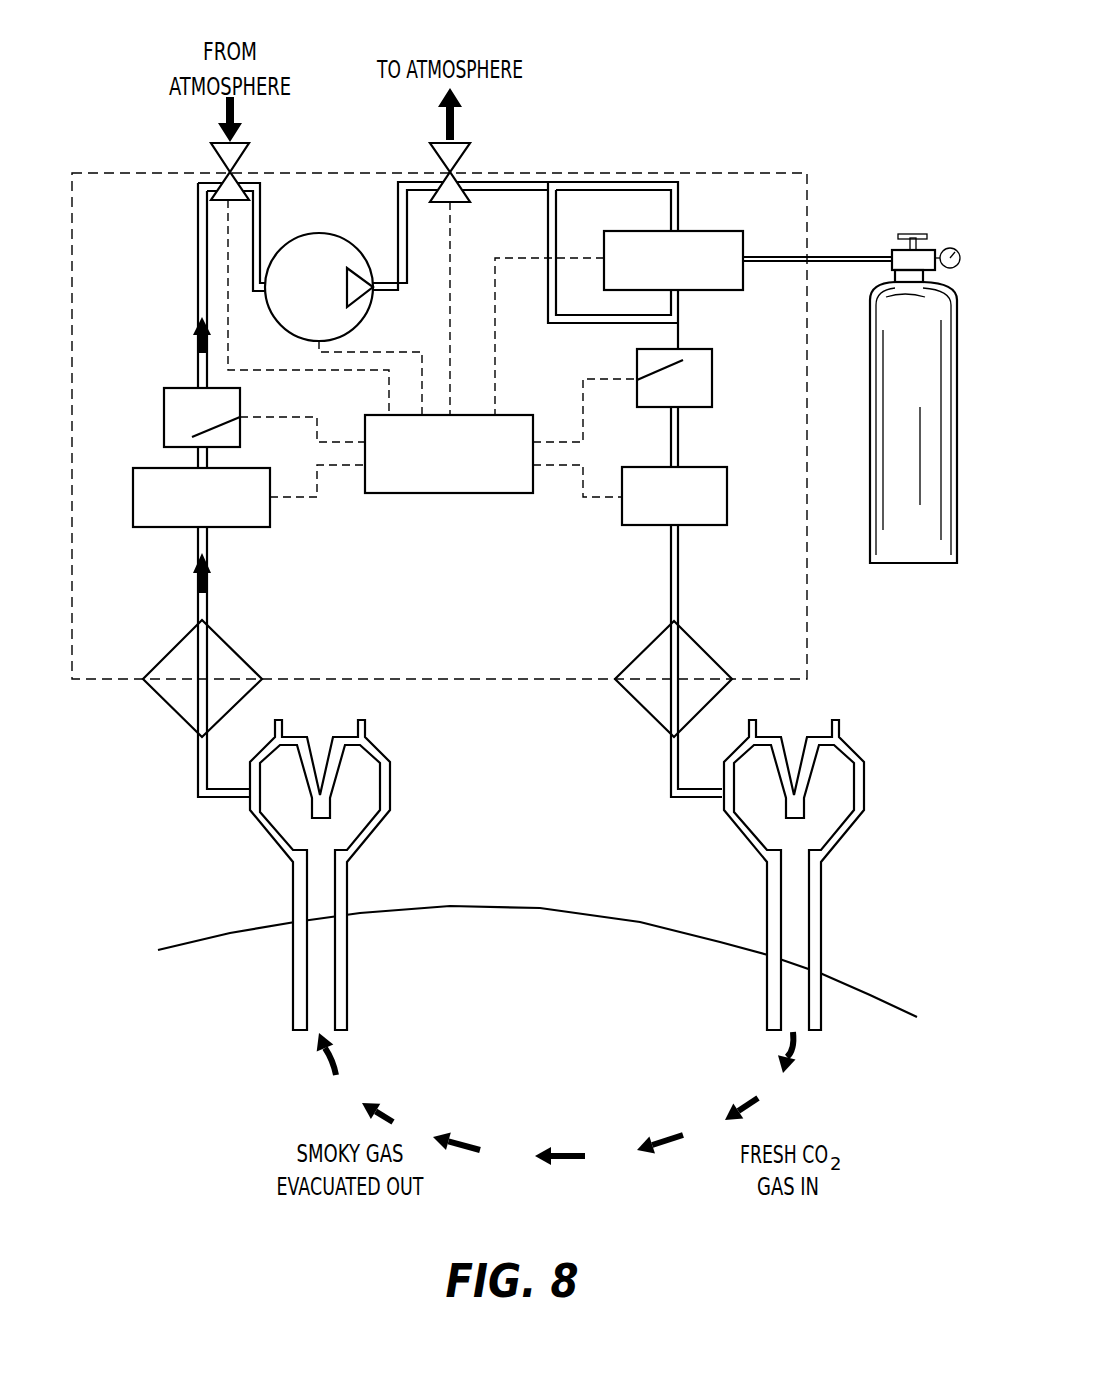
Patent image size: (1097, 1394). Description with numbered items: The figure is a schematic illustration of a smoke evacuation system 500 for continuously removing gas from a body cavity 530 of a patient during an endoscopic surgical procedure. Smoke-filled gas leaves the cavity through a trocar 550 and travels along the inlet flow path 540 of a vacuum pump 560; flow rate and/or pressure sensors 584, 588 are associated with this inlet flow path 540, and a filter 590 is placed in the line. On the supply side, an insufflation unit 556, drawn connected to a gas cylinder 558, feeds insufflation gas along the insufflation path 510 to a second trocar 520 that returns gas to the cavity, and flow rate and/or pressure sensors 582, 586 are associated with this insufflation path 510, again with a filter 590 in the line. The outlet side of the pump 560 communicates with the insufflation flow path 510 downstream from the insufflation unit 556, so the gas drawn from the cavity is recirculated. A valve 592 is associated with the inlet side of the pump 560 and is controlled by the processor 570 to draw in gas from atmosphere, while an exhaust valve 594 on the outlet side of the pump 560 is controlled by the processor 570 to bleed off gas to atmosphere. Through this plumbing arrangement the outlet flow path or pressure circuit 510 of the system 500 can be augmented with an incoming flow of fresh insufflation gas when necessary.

The smoke evacuation system 500 is at (140, 52).
The insufflation path 510 is at (628, 740).
The trocar 520 is at (820, 955).
The body cavity 530 is at (600, 950).
The inlet flow path 540 is at (178, 766).
The trocar 550 is at (300, 903).
The insufflation unit 556 is at (650, 278).
The gas cylinder 558 is at (890, 393).
The vacuum pump 560 is at (370, 312).
The processor 570 is at (426, 472).
The flow rate and/or pressure sensor 582 is at (651, 514).
The flow rate and/or pressure sensor 584 is at (179, 514).
The flow rate and/or pressure sensor 586 is at (712, 377).
The flow rate and/or pressure sensor 588 is at (164, 423).
The filter 590 is at (227, 642).
The valve 592 is at (247, 153).
The exhaust valve 594 is at (467, 153).